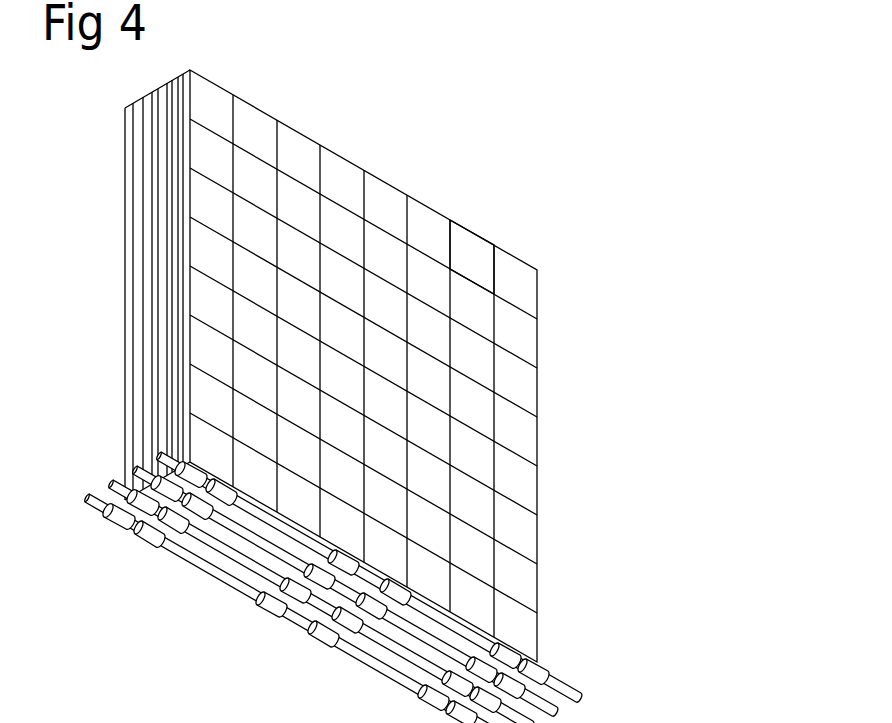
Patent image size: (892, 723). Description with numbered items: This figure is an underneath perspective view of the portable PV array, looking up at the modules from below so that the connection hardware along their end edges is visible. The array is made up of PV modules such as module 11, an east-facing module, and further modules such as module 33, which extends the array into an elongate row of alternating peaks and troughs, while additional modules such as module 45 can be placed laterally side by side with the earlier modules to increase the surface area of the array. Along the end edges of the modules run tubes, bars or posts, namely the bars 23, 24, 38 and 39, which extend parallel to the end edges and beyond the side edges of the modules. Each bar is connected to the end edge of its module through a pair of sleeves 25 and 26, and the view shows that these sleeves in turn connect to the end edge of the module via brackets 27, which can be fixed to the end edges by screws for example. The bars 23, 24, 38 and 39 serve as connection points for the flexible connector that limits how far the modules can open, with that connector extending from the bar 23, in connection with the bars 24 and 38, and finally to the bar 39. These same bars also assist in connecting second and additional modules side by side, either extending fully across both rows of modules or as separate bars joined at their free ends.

The PV module 11 is at (125, 425).
The PV module 33 is at (258, 138).
The PV module 45 is at (472, 255).
The bar 23 is at (86, 507).
The bar 24 is at (110, 493).
The bar 38 is at (133, 507).
The bar 39 is at (167, 507).
The sleeve 26 is at (150, 543).
The sleeve 25 is at (265, 610).
The bracket 27 is at (303, 613).